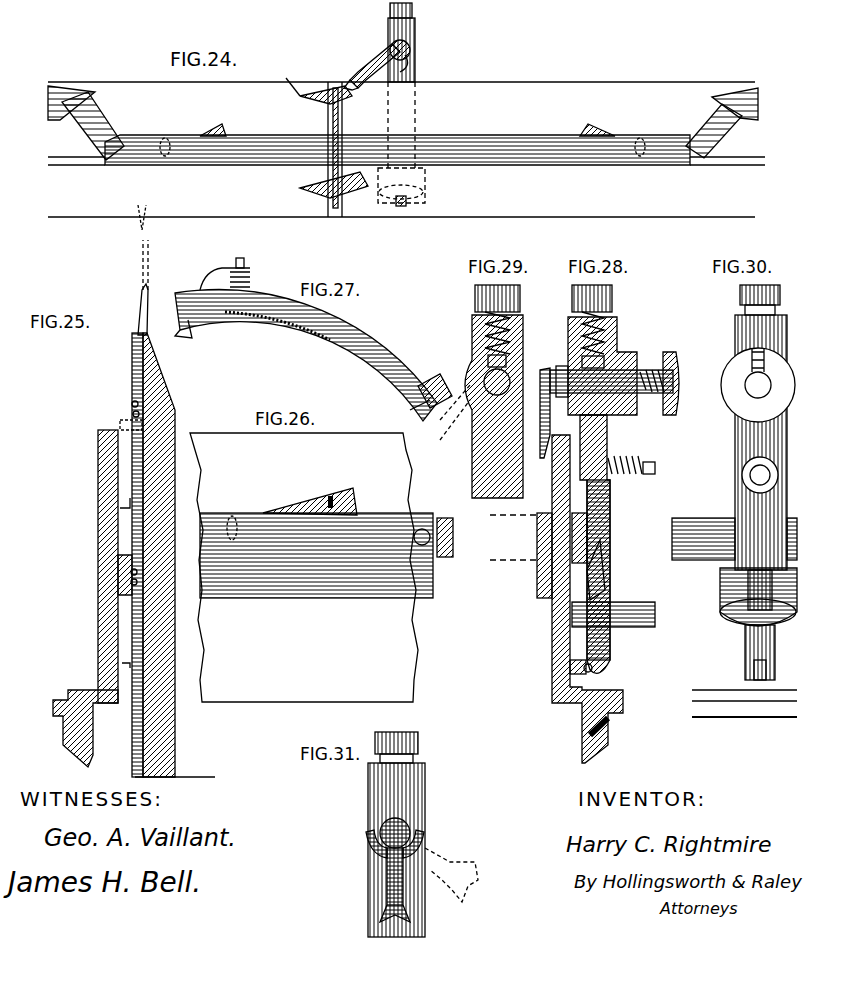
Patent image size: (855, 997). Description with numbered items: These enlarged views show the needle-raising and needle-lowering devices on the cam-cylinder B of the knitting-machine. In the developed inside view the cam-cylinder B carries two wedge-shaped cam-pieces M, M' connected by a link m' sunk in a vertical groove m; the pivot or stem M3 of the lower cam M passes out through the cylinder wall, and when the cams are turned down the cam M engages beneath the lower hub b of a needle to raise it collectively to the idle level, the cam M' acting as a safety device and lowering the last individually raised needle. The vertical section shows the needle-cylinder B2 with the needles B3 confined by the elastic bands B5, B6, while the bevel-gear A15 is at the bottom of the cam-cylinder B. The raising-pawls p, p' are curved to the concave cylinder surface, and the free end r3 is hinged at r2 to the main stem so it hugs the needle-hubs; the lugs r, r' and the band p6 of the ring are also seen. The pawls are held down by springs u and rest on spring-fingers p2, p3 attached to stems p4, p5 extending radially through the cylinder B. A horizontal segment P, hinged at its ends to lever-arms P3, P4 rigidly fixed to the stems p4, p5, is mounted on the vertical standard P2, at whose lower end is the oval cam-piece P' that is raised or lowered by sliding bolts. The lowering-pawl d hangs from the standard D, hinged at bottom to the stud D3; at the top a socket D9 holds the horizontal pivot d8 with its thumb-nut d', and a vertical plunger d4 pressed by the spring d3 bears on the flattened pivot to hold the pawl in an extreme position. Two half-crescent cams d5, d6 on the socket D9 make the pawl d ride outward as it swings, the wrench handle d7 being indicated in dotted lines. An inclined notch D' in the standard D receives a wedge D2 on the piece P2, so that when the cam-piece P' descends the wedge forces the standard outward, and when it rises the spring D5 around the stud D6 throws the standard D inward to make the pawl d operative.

In FIG. 24, the cam-cylinder B is at (148, 97).
In FIG. 25, the cam-cylinder B is at (98, 488).
In FIG. 26, the cam-cylinder B is at (236, 446).
In FIG. 27, the cam-cylinder B is at (388, 350).
In FIG. 28, the cam-cylinder B is at (552, 645).
In FIG. 25, the needle-cylinder B2 is at (168, 382).
In FIG. 25, the needles B3 is at (138, 285).
In FIG. 25, the elastic band B5 is at (130, 404).
In FIG. 25, the elastic band B6 is at (134, 596).
In FIG. 25, the lower needle-hub b is at (124, 500).
In FIG. 25, the bevel-gear A15 is at (63, 740).
In FIG. 28, the bevel-gear A15 is at (610, 740).
In FIG. 24, the horizontal segment P is at (397, 137).
In FIG. 28, the horizontal segment P is at (597, 538).
In FIG. 30, the horizontal segment P is at (734, 508).
In FIG. 24, the cam-piece P' is at (411, 199).
In FIG. 28, the cam-piece P' is at (616, 625).
In FIG. 30, the cam-piece P' is at (754, 619).
In FIG. 24, the vertical standard P2 is at (426, 188).
In FIG. 28, the vertical standard P2 is at (552, 600).
In FIG. 30, the vertical standard P2 is at (720, 588).
In FIG. 24, the lever-arm P3 is at (512, 166).
In FIG. 26, the lever-arm P3 is at (442, 558).
In FIG. 24, the lever-arm P4 is at (260, 165).
In FIG. 24, the raising-pawl p is at (626, 120).
In FIG. 24, the raising-pawl p' is at (207, 113).
In FIG. 26, the raising-pawl p' is at (310, 493).
In FIG. 27, the raising-pawl p' is at (275, 345).
In FIG. 24, the spring-finger p2 is at (578, 164).
In FIG. 24, the spring-finger p3 is at (224, 160).
In FIG. 27, the spring-finger p3 is at (370, 360).
In FIG. 24, the stem p4 is at (547, 115).
In FIG. 24, the stem p5 is at (256, 134).
In FIG. 26, the stem p5 is at (414, 544).
In FIG. 27, the stem p5 is at (404, 412).
In FIG. 26, the rail band p6 is at (316, 555).
In FIG. 24, the lug r is at (594, 122).
In FIG. 24, the lug r' is at (626, 127).
In FIG. 24, the hinge r2 is at (166, 138).
In FIG. 26, the hinge r2 is at (232, 516).
In FIG. 27, the hinge r2 is at (326, 344).
In FIG. 24, the free end of pawl r3 is at (226, 130).
In FIG. 26, the free end of pawl r3 is at (345, 496).
In FIG. 27, the free end of pawl r3 is at (346, 350).
In FIG. 24, the lower cam-piece M is at (326, 185).
In FIG. 24, the upper cam-piece M' is at (319, 91).
In FIG. 24, the pivot or stem M3 is at (358, 186).
In FIG. 24, the vertical groove m is at (350, 149).
In FIG. 24, the link m' is at (314, 116).
In FIG. 24, the vertical standard D is at (414, 85).
In FIG. 29, the vertical standard D is at (480, 406).
In FIG. 28, the vertical standard D is at (607, 544).
In FIG. 30, the vertical standard D is at (745, 427).
In FIG. 31, the vertical standard D is at (383, 834).
In FIG. 28, the inclined notch D' is at (610, 570).
In FIG. 28, the wedge D2 is at (605, 586).
In FIG. 30, the wedge D2 is at (775, 590).
In FIG. 24, the stud D3 is at (402, 218).
In FIG. 28, the stud D3 is at (590, 678).
In FIG. 30, the stud D3 is at (752, 680).
In FIG. 28, the spring D5 is at (630, 462).
In FIG. 28, the stud D6 is at (655, 470).
In FIG. 29, the socket D9 is at (466, 380).
In FIG. 28, the socket D9 is at (622, 352).
In FIG. 24, the lowering-pawl d is at (372, 67).
In FIG. 29, the lowering-pawl d is at (530, 474).
In FIG. 28, the lowering-pawl d is at (539, 428).
In FIG. 31, the lowering-pawl d is at (378, 870).
In FIG. 29, the thumb-nut d' is at (456, 427).
In FIG. 28, the thumb-nut d' is at (672, 369).
In FIG. 30, the thumb-nut d' is at (744, 375).
In FIG. 29, the spring d3 is at (522, 330).
In FIG. 28, the spring d3 is at (568, 340).
In FIG. 29, the vertical plunger d4 is at (510, 362).
In FIG. 28, the vertical plunger d4 is at (568, 368).
In FIG. 24, the wedge-shaped cam d5 is at (392, 48).
In FIG. 31, the wedge-shaped cam d5 is at (366, 838).
In FIG. 24, the wedge-shaped cam d6 is at (412, 52).
In FIG. 31, the wedge-shaped cam d6 is at (426, 848).
In FIG. 31, the wrench handle d7 is at (455, 872).
In FIG. 29, the horizontal pivot d8 is at (470, 360).
In FIG. 28, the horizontal pivot d8 is at (630, 400).
In FIG. 27, the spring u is at (218, 270).